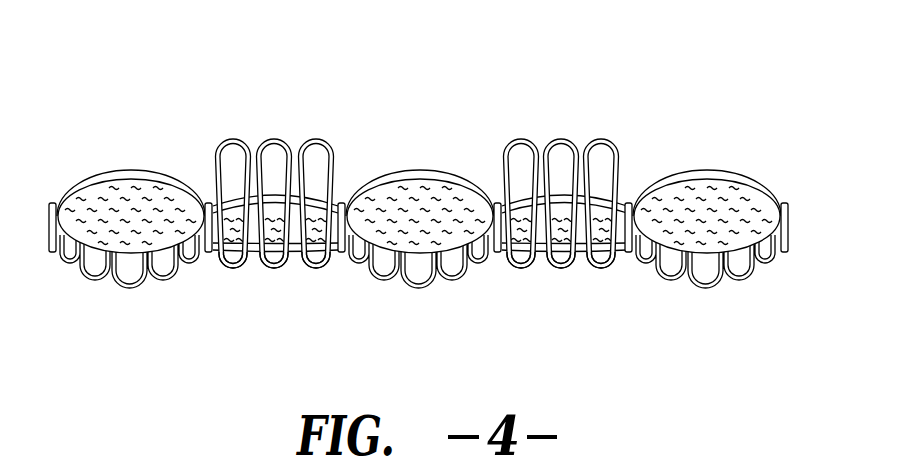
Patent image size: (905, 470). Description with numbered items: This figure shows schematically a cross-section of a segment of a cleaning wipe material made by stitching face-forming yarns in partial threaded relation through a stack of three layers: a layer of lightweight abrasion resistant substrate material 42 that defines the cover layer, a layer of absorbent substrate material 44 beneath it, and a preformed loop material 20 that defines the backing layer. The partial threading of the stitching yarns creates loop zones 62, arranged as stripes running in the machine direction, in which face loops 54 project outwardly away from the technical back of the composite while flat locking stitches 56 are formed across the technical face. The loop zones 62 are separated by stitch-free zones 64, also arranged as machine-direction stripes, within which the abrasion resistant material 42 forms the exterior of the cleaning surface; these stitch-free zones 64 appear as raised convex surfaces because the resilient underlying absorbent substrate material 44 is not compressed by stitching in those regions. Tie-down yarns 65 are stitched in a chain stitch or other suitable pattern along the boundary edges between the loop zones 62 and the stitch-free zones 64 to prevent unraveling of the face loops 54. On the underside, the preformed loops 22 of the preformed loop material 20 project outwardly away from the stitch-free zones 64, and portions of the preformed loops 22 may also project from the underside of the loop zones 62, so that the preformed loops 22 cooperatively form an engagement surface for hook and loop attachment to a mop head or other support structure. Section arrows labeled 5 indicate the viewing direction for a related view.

The section line for FIG. 5 is at (38, 0).
The preformed loop material 20 is at (462, 195).
The preformed loops 22 is at (127, 291).
The abrasion resistant substrate material 42 is at (115, 170).
The absorbent substrate material 44 is at (750, 211).
The face loops 54 is at (265, 136).
The flat locking stitches 56 is at (254, 269).
The loop zones 62 is at (245, 83).
The stitch-free zones 64 is at (138, 160).
The tie-down yarns 65 is at (209, 270).